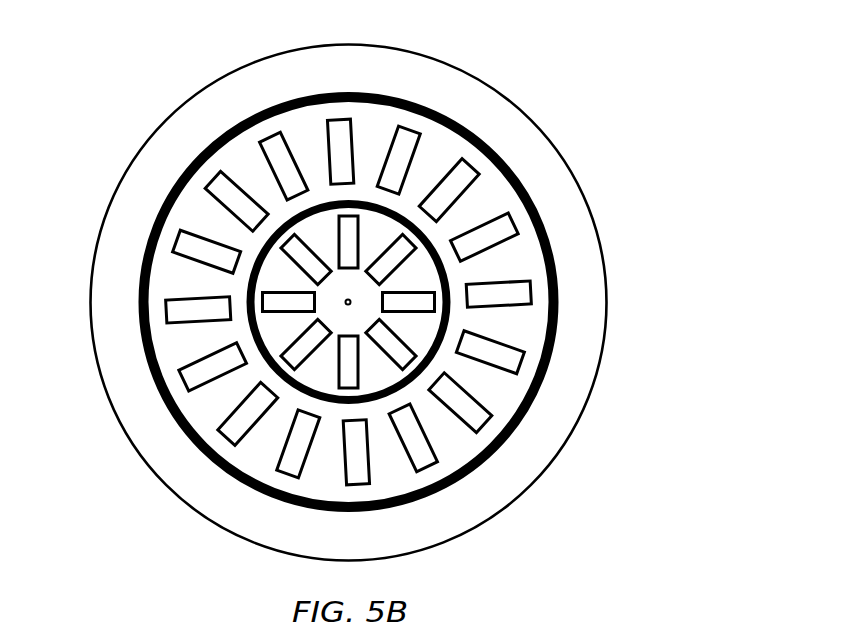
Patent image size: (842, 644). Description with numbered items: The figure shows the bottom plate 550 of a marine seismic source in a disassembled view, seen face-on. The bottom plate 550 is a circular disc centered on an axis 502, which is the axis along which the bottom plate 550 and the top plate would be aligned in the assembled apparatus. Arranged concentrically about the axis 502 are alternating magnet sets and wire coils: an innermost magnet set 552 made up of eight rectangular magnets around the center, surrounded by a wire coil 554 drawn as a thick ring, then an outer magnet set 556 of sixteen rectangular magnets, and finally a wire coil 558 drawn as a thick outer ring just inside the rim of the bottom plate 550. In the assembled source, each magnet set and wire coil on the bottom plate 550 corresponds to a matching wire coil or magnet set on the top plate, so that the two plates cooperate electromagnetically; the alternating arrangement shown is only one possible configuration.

The bottom plate 550 is at (182, 112).
The wire coil 558 is at (167, 205).
The wire coil 554 is at (253, 322).
The magnet set 556 is at (472, 172).
The magnet set 552 is at (425, 305).
The axis 502 is at (351, 301).